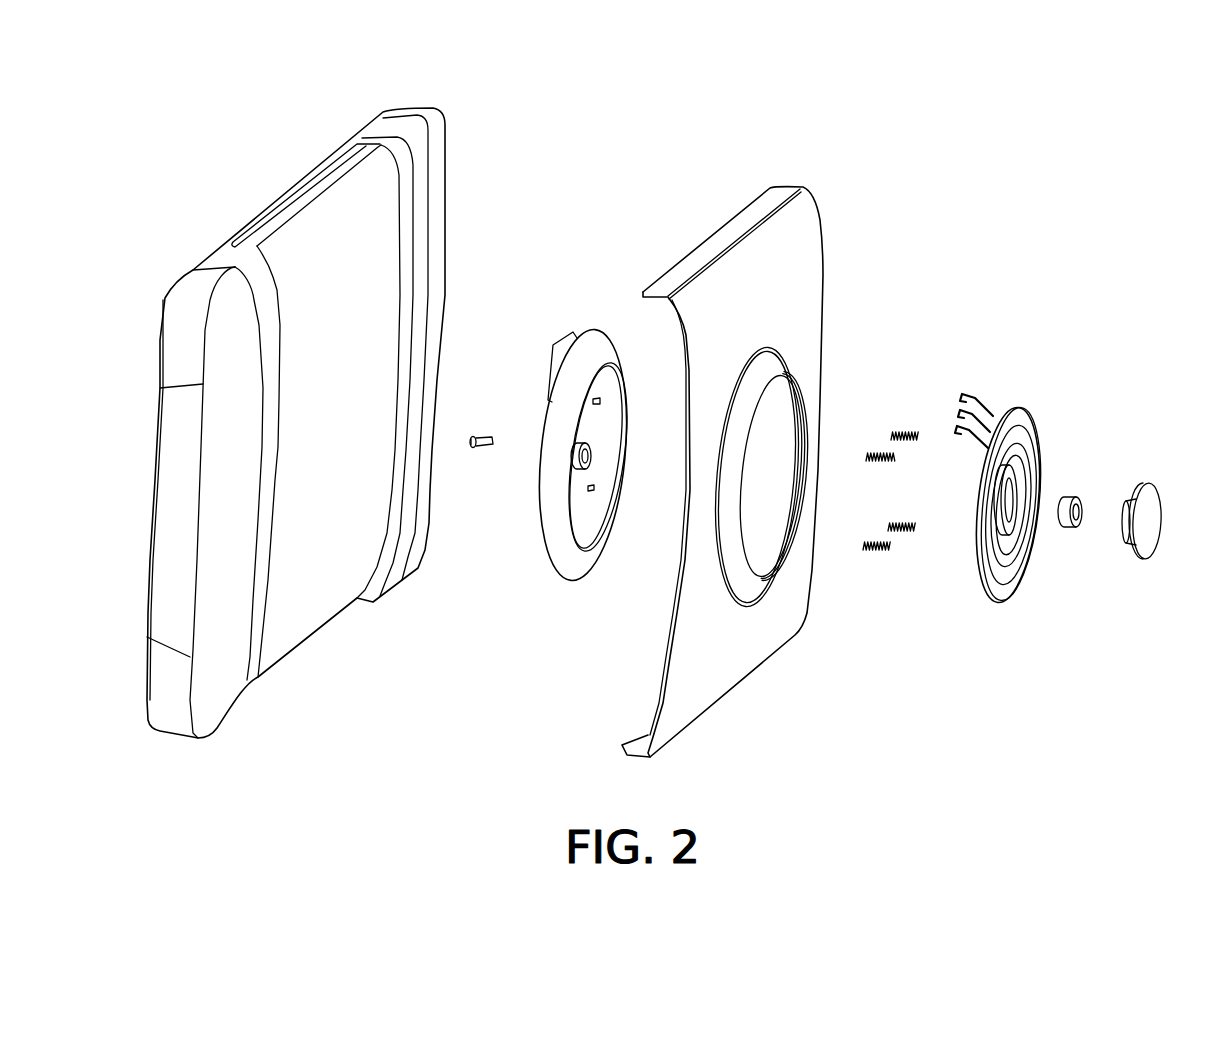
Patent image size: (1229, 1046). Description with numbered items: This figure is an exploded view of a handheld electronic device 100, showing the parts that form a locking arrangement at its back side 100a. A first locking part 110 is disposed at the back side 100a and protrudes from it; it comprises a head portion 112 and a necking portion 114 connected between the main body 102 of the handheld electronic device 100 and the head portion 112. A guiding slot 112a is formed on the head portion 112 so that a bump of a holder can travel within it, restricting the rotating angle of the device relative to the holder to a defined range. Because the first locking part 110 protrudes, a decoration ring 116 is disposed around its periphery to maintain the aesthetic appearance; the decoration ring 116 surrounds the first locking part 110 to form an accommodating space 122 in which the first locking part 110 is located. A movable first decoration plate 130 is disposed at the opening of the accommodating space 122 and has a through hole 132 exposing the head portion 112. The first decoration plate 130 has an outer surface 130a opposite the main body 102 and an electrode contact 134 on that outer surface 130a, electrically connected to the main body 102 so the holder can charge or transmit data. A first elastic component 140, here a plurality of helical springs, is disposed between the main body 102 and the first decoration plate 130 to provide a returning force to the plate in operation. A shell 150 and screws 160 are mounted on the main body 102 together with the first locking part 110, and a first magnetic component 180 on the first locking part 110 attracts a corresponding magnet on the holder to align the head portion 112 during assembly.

The handheld electronic device 100 is at (778, 774).
The back side 100a is at (388, 215).
The main body 102 is at (406, 111).
The first locking part 110 is at (1148, 600).
The head portion 112 is at (1158, 538).
The guiding slot 112a is at (1141, 562).
The necking portion 114 is at (1122, 540).
The decoration ring 116 is at (592, 344).
The accommodating space 122 is at (589, 513).
The first decoration plate 130 is at (1034, 476).
The outer surface 130a is at (1035, 416).
The through hole 132 is at (1012, 511).
The electrode contact 134 is at (1023, 428).
The first elastic component 140 is at (870, 450).
The shell 150 is at (806, 221).
The screws 160 is at (483, 437).
The first magnetic component 180 is at (1079, 503).